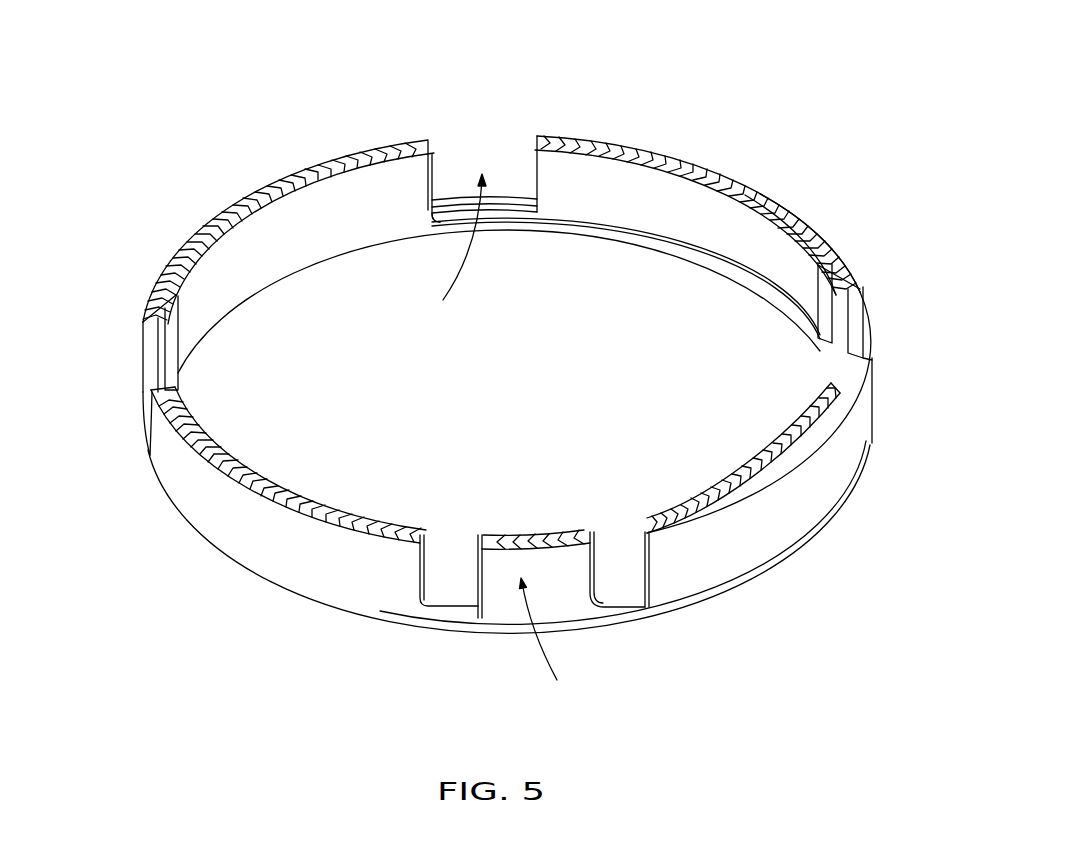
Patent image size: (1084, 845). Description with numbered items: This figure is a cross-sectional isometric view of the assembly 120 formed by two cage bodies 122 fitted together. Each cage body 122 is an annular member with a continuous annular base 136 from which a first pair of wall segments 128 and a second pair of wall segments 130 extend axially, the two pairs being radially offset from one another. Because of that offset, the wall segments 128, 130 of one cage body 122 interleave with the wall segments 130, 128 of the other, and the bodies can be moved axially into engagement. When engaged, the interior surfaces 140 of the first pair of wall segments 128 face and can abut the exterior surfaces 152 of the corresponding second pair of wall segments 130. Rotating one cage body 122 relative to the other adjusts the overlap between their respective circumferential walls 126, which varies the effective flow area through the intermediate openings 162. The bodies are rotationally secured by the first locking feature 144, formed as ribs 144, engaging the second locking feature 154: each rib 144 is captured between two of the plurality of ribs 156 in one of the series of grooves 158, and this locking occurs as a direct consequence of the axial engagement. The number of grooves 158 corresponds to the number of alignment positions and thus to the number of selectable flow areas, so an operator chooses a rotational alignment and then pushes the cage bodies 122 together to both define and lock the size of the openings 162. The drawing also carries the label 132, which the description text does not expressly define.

The ring assembly 120 is at (657, 108).
The cage body 122 is at (143, 357).
The circumferential wall 126 is at (168, 455).
The first pair of wall segments 128 is at (292, 168).
The second pair of wall segments 130 is at (378, 148).
The slot side face 132 is at (474, 587).
The continuous annular base 136 is at (443, 220).
The interior surface 140 is at (153, 339).
The first locking feature 144 is at (742, 197).
The exterior surface 152 is at (443, 578).
The second locking feature 154 is at (811, 222).
The rib 156 is at (712, 202).
The groove 158 is at (777, 203).
The opening 162 is at (492, 440).